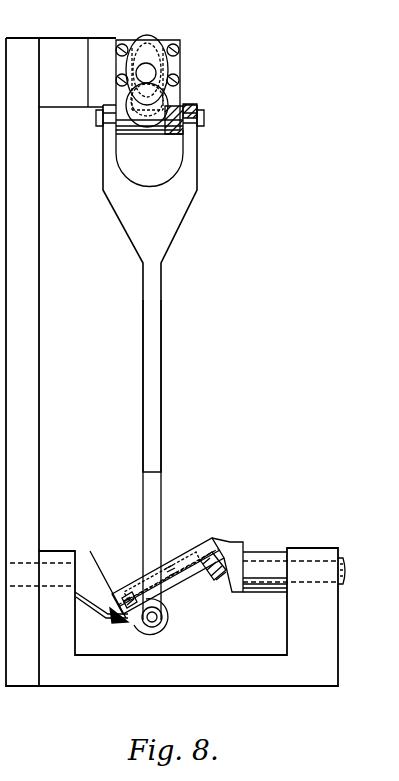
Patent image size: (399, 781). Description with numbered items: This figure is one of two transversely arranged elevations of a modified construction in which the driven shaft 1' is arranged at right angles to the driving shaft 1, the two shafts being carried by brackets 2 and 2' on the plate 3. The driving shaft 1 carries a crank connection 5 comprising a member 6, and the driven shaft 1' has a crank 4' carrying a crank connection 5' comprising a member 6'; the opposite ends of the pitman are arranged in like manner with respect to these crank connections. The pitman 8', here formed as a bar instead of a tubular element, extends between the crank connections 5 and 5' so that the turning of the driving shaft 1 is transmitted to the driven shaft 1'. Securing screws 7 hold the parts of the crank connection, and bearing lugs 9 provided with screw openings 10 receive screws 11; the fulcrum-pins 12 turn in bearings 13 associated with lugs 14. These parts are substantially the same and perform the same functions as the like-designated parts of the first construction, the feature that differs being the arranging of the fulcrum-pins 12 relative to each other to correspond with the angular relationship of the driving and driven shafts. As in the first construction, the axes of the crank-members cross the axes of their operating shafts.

The driving shaft 1 is at (146, 73).
The bracket 2 is at (71, 72).
The plate 3 is at (38, 371).
The crank connection 5 is at (148, 72).
The securing screw 7 is at (116, 51).
The pitman 8' is at (161, 386).
The bearing lug 9 is at (103, 152).
The screw opening 10 is at (193, 108).
The screw 11 is at (96, 121).
The fulcrum-pin 12 is at (172, 140).
The bearing 13 is at (163, 136).
The lug 14 is at (140, 136).
The member of crank connection 6 is at (107, 587).
The crank connection 5' is at (168, 565).
The member of crank connection 6' is at (214, 578).
The crank 4' is at (227, 554).
The bracket 2' is at (290, 562).
The driven shaft 1' is at (336, 553).